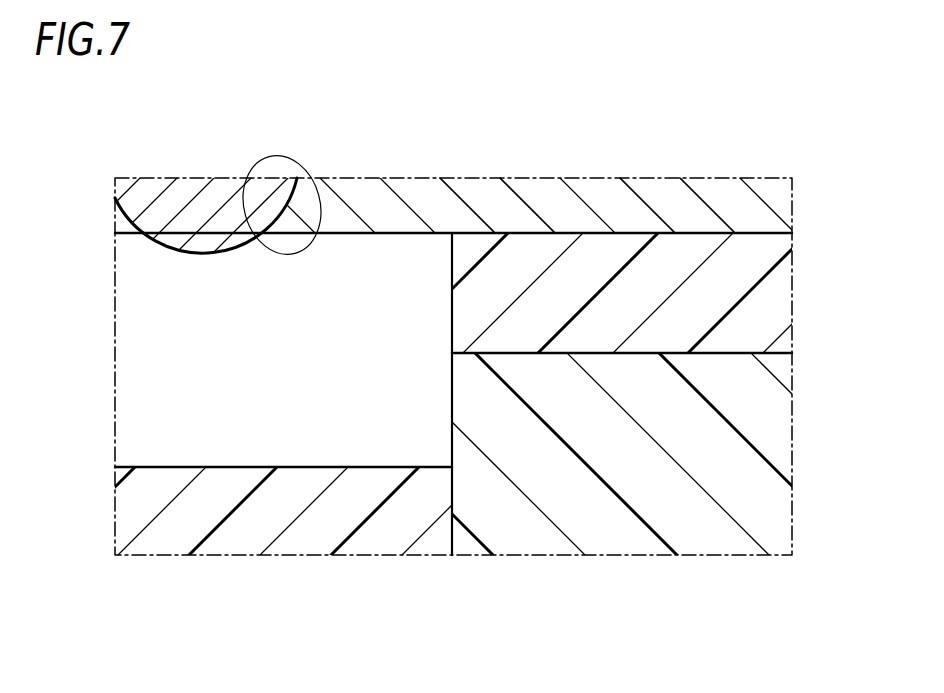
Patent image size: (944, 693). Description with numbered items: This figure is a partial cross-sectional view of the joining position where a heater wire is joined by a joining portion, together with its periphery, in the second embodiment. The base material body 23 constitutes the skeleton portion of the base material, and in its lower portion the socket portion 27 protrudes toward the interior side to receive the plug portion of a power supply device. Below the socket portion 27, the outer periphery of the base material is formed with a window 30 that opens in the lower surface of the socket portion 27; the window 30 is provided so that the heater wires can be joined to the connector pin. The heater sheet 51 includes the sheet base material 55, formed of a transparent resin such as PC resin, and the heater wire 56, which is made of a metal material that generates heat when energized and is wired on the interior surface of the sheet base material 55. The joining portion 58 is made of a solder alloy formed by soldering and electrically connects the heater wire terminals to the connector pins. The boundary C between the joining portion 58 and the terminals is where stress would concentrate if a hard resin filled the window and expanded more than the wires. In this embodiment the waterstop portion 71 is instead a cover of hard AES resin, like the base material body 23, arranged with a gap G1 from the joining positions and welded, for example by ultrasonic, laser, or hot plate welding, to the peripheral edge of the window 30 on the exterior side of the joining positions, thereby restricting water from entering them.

The socket portion 27 is at (780, 161).
The heater sheet 51 is at (742, 132).
The heater wire 56 is at (538, 187).
The sheet base material 55 is at (683, 257).
The joining portion 58 is at (190, 190).
The boundary C is at (306, 157).
The gap G1 is at (145, 355).
The waterstop portion 71 is at (243, 542).
The window 30 is at (448, 527).
The base material body 23 is at (613, 533).